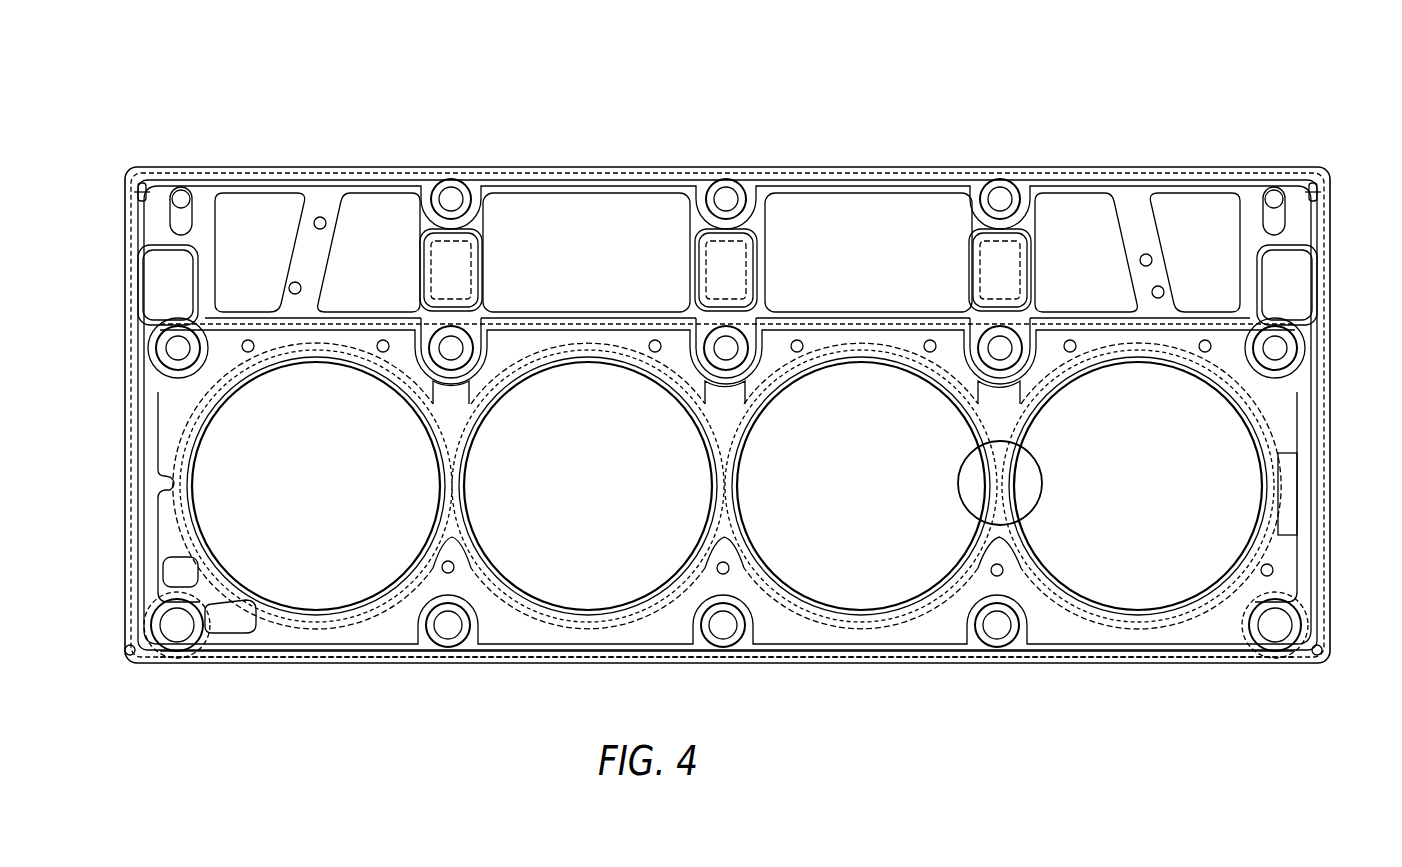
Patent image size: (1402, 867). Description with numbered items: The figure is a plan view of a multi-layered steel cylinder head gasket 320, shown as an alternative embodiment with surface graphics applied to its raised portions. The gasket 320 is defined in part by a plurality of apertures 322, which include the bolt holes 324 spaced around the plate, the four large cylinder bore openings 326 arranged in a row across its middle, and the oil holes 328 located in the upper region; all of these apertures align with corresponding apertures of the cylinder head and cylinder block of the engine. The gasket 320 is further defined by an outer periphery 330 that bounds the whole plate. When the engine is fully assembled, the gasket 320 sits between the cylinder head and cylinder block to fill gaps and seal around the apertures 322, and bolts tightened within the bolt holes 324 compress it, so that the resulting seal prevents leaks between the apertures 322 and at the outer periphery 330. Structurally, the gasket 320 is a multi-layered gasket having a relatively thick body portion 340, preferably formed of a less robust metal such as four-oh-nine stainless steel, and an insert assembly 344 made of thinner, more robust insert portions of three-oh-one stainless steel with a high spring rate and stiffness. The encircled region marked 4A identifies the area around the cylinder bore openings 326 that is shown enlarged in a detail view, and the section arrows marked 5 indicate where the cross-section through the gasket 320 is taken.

The gasket 320 is at (1150, 105).
The outer periphery 330 is at (606, 168).
The oil holes 328 is at (548, 212).
The apertures 322 is at (965, 232).
The bolt holes 324 is at (1000, 345).
The cylinder bore openings 326 is at (325, 497).
The insert assembly 344 is at (197, 483).
The body portion 340 is at (167, 523).
The detail view 4A is at (1035, 462).
The section line 5 is at (781, 552).